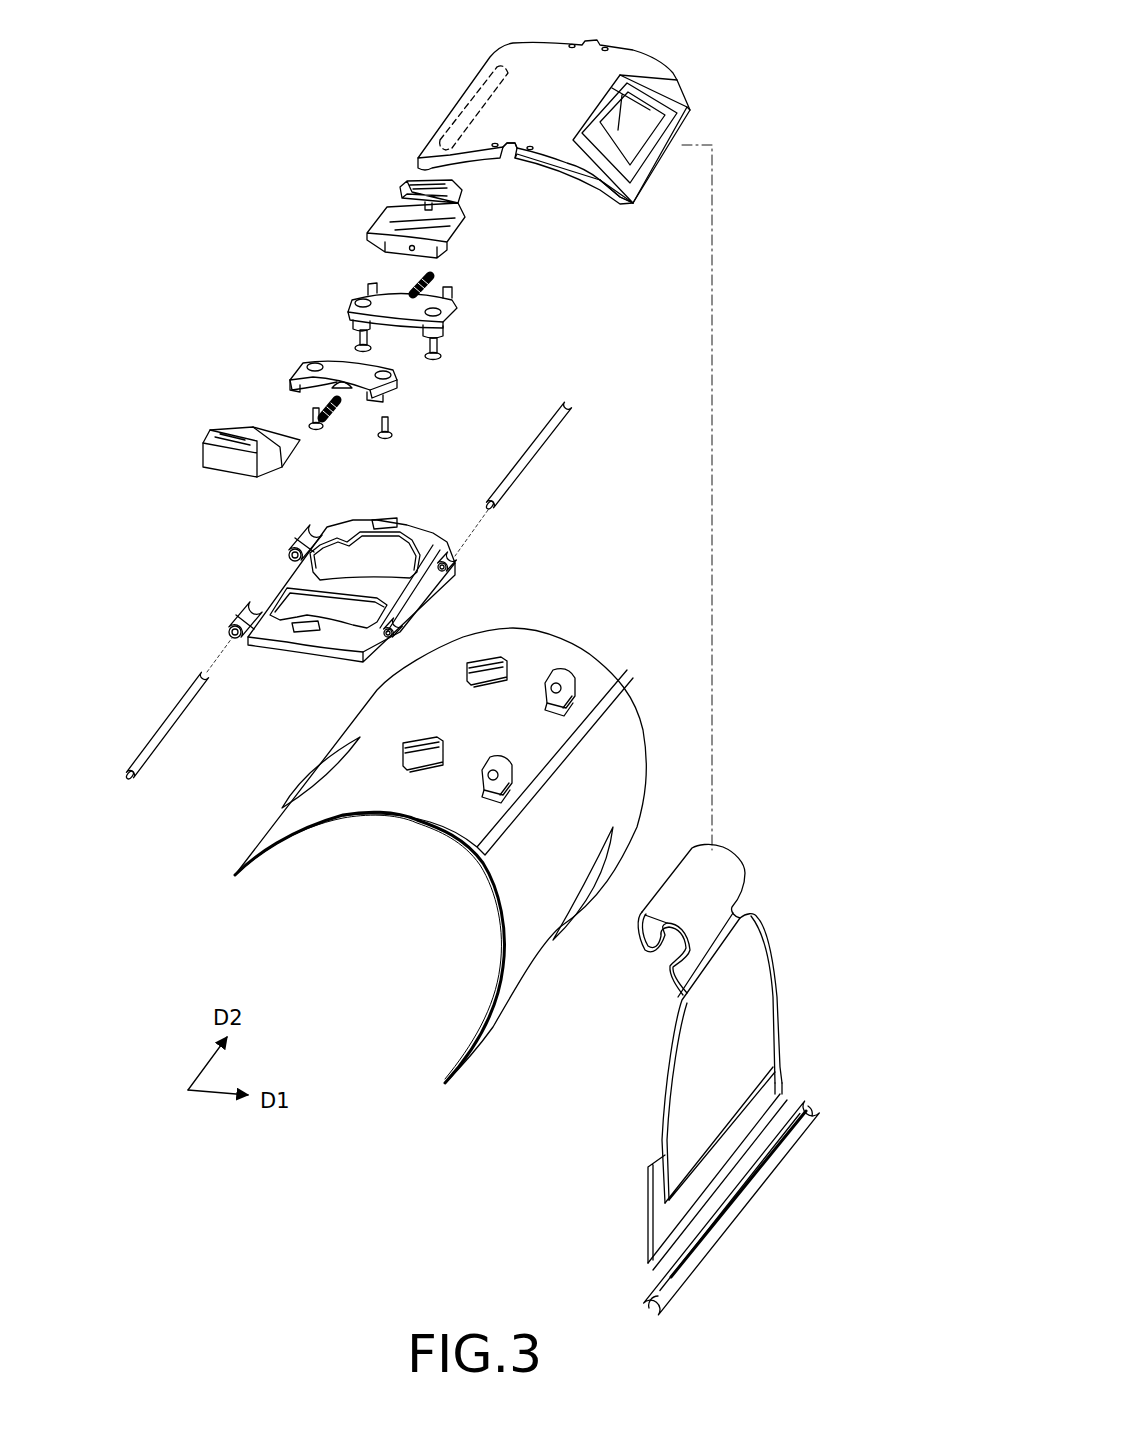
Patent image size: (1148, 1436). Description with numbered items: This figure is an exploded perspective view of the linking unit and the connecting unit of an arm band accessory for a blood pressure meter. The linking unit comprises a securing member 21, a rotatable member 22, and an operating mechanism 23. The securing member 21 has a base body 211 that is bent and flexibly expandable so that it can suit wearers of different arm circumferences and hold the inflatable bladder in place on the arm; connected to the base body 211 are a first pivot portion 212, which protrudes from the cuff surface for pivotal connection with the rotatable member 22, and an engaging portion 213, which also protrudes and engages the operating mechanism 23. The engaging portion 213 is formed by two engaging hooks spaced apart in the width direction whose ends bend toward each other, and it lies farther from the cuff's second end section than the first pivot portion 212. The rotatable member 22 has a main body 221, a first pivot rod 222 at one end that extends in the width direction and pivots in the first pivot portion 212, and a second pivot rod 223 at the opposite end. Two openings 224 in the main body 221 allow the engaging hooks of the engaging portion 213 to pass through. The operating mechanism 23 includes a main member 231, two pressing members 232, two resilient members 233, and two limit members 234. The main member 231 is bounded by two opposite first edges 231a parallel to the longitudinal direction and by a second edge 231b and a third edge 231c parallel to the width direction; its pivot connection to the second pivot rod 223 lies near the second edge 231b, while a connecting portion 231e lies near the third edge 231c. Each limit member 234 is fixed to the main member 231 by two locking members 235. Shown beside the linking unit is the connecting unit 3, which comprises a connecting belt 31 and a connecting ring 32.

The connecting unit 3 is at (761, 1077).
The connecting belt 31 is at (750, 952).
The connecting ring 32 is at (813, 1102).
The securing member 21 is at (471, 823).
The base body 211 is at (627, 733).
The first pivot portion 212 is at (500, 758).
The engaging portion 213 is at (422, 737).
The rotatable member 22 is at (391, 591).
The main body 221 is at (335, 570).
The first pivot rod 222 is at (542, 430).
The second pivot rod 223 is at (178, 713).
The openings 224 is at (360, 536).
The operating mechanism 23 is at (480, 238).
The main member 231 is at (575, 111).
The first edges 231a is at (490, 157).
The second edge 231b is at (480, 83).
The third edge 231c is at (677, 81).
The connecting portion 231e is at (616, 146).
The pressing members 232 is at (400, 186).
The resilient members 233 is at (415, 282).
The limit members 234 is at (456, 306).
The locking members 235 is at (358, 340).